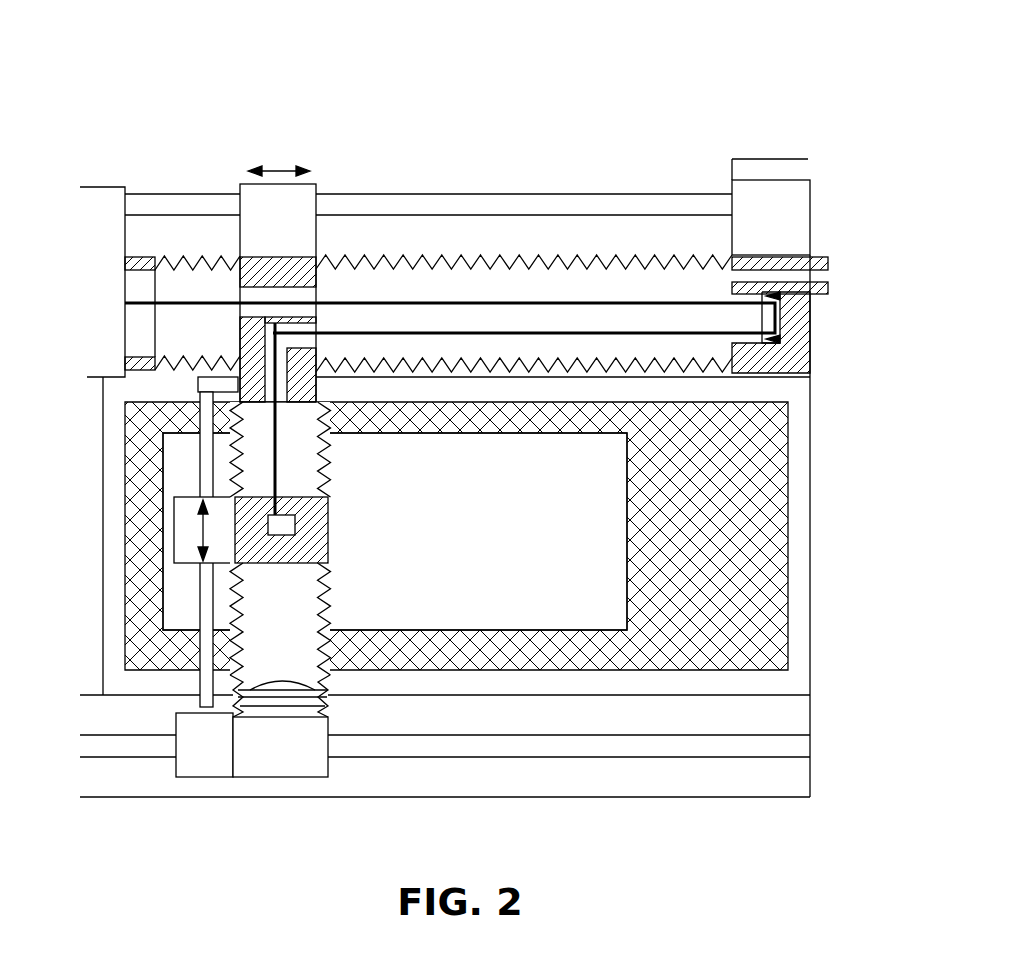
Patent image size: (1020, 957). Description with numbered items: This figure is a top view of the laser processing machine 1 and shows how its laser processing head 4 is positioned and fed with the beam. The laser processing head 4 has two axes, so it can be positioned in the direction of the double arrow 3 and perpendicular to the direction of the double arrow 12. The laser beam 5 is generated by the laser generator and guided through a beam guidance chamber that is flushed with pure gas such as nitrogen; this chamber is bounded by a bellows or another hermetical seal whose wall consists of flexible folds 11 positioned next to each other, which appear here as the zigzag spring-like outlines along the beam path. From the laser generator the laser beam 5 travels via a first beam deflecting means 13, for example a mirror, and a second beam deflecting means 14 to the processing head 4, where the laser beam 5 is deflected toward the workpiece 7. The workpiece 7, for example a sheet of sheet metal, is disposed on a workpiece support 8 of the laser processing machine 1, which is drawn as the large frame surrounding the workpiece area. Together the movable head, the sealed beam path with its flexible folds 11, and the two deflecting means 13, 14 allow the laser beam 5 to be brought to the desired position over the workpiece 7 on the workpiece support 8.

The laser processing machine 1 is at (548, 103).
The double arrow 3 is at (202, 530).
The laser processing head 4 is at (295, 550).
The laser beam 5 is at (604, 302).
The workpiece 7 is at (575, 565).
The workpiece support 8 is at (682, 635).
The flexible folds 11 is at (430, 258).
The double arrow 12 is at (281, 167).
The first beam deflecting means 13 is at (780, 337).
The second beam deflecting means 14 is at (268, 334).